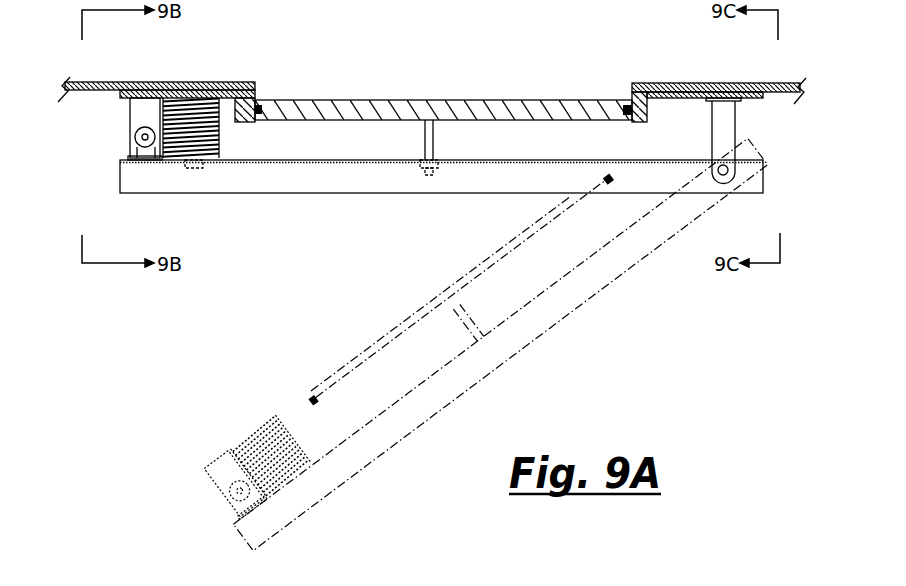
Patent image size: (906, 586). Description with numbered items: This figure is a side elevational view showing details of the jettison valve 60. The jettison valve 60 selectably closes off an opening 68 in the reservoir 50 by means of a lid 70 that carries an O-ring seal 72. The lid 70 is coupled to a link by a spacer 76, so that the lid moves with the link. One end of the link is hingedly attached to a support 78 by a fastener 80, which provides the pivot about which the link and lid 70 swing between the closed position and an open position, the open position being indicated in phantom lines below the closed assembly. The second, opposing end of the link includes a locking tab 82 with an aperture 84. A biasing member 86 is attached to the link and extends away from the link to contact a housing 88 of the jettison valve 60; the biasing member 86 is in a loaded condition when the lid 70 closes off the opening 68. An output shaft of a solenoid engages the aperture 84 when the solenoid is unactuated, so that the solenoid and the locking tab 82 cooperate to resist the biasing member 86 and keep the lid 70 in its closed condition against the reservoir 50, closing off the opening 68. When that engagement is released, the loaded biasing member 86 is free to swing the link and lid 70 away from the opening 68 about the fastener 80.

The reservoir 50 is at (698, 82).
The jettison valve 60 is at (169, 221).
The opening 68 is at (441, 144).
The lid 70 is at (478, 121).
The O-ring seal 72 is at (261, 115).
The spacer 76 is at (425, 143).
The support 78 is at (740, 123).
The fastener 80 is at (716, 171).
The locking tab 82 is at (136, 158).
The aperture 84 is at (140, 136).
The biasing member 86 is at (214, 135).
The housing 88 is at (640, 123).